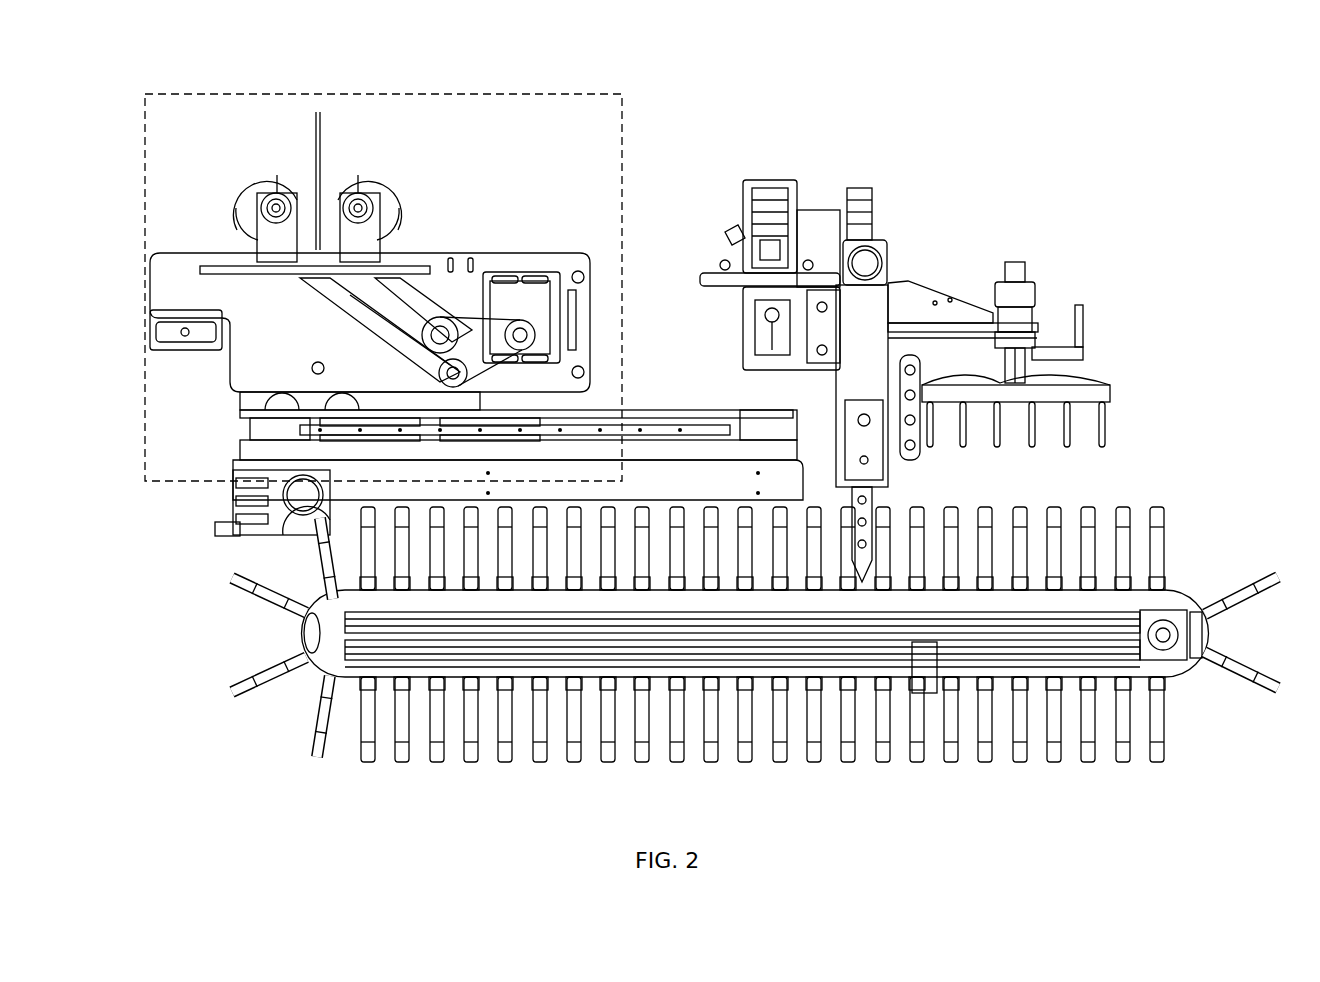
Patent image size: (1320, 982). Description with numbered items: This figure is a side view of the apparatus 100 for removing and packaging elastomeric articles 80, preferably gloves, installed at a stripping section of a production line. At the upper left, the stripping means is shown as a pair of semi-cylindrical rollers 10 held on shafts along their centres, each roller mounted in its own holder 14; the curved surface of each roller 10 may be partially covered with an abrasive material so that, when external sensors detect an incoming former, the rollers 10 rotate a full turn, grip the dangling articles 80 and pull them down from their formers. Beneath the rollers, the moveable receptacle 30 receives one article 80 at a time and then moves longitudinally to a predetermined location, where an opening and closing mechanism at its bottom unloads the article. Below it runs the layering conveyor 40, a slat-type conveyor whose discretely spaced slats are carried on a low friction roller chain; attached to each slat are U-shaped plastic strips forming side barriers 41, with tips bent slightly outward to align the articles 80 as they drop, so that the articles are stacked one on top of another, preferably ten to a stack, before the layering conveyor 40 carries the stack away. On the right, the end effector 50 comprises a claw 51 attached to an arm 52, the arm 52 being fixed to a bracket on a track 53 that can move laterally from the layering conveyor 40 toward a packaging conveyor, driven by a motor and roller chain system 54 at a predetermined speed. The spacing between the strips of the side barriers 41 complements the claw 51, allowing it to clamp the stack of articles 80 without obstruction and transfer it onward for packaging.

The apparatus for removing and packaging elastomeric articles 100 is at (1228, 217).
The semi-cylindrical roller 10 is at (317, 148).
The pressing roller 14 is at (247, 182).
The elastomeric article 80 is at (318, 147).
The moveable receptacle 30 is at (482, 412).
The layering conveyor 40 is at (187, 565).
The side barrier 41 is at (325, 714).
The end effector 50 is at (1033, 290).
The claw 51 is at (1100, 385).
The arm 52 is at (940, 312).
The track 53 is at (863, 293).
The motor and roller chain system 54 is at (751, 200).